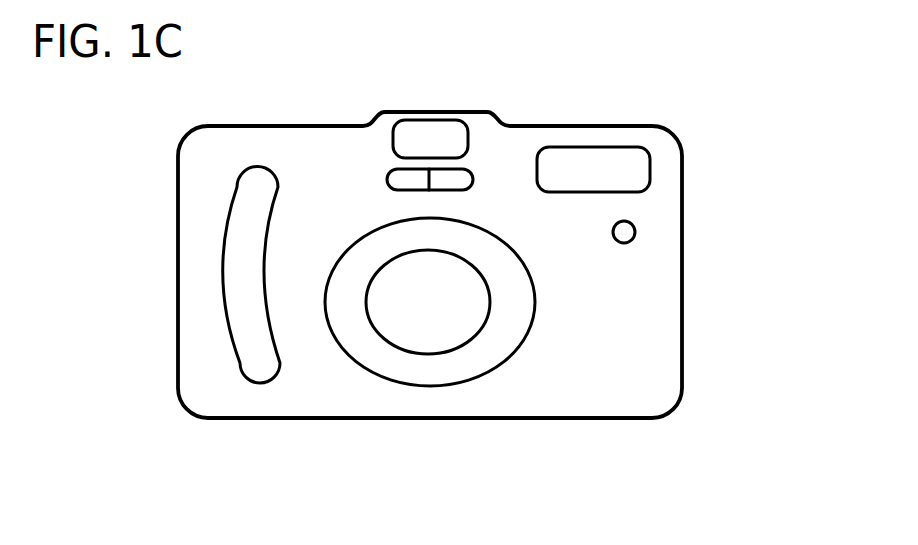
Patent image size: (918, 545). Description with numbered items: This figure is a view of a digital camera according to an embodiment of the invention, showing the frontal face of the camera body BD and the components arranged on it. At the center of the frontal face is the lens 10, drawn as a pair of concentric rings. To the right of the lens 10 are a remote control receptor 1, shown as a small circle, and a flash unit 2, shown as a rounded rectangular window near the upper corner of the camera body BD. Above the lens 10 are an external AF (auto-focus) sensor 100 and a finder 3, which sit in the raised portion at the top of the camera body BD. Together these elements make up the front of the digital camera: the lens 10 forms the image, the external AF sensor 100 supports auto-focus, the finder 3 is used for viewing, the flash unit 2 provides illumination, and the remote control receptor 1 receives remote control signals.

The camera body BD is at (610, 126).
The finder 3 is at (432, 120).
The external AF sensor 100 is at (370, 177).
The flash unit 2 is at (650, 168).
The remote control receptor 1 is at (636, 232).
The lens 10 is at (468, 318).